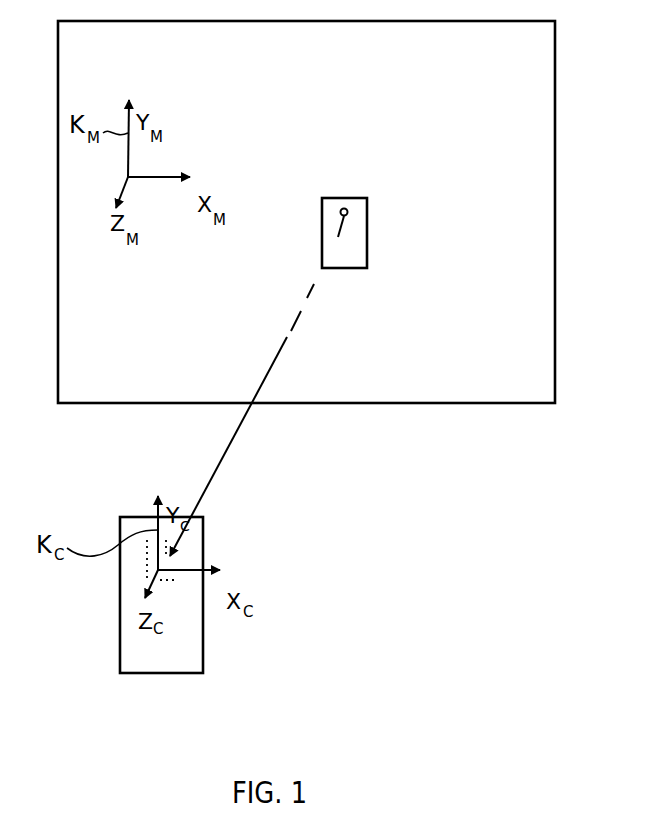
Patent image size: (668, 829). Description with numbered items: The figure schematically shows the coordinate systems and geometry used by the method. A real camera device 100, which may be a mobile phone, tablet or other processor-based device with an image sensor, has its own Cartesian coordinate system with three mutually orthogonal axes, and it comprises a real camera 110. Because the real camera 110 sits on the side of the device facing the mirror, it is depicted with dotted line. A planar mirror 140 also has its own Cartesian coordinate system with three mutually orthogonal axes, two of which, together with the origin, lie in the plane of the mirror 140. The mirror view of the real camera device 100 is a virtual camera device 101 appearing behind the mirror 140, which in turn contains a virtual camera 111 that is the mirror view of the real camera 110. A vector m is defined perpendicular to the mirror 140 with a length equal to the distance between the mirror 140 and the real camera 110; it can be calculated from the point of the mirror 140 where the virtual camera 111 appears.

The planar mirror 140 is at (555, 348).
The virtual camera device 101 is at (367, 257).
The virtual camera 111 is at (345, 198).
The real camera 110 is at (177, 567).
The real camera device 100 is at (203, 662).
The vector m is at (215, 467).